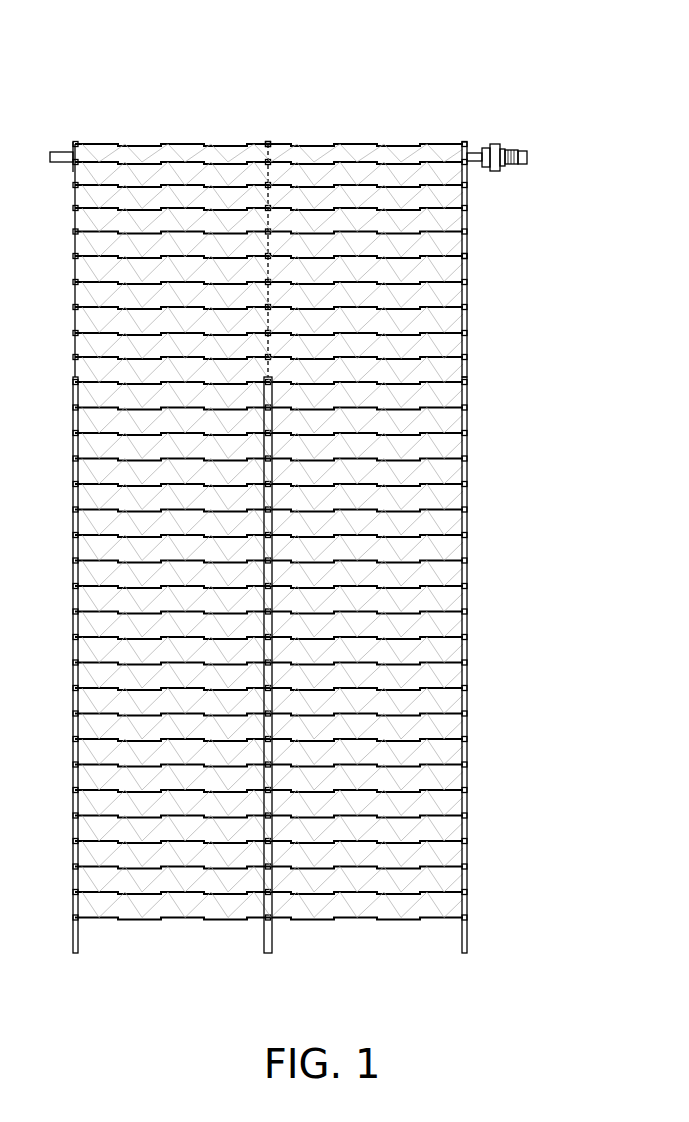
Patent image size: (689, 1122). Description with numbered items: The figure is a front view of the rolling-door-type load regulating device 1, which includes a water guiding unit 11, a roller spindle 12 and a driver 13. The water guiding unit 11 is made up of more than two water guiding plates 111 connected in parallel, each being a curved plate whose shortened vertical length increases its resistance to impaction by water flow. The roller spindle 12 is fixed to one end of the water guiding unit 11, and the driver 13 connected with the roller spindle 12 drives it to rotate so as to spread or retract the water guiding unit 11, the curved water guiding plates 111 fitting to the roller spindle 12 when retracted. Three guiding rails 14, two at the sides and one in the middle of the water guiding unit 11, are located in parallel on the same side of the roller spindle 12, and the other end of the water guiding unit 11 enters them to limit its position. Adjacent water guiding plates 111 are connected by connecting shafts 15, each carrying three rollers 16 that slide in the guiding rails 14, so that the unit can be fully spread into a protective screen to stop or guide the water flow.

The rolling-door-type load regulating device 1 is at (119, 108).
The water guiding unit 11 is at (378, 135).
The water guiding plate 111 is at (467, 192).
The roller spindle 12 is at (470, 153).
The driver 13 is at (528, 157).
The guiding rail 14 is at (462, 940).
The connecting shaft 15 is at (467, 225).
The roller 16 is at (269, 141).